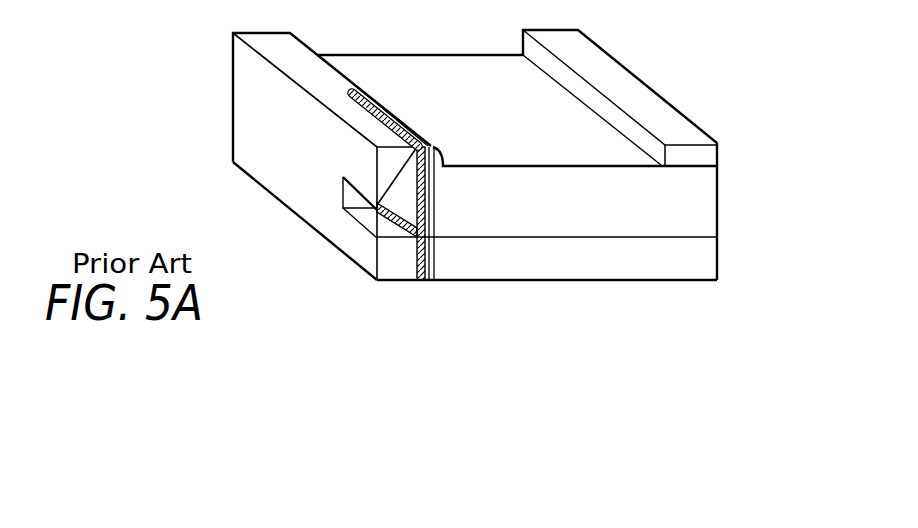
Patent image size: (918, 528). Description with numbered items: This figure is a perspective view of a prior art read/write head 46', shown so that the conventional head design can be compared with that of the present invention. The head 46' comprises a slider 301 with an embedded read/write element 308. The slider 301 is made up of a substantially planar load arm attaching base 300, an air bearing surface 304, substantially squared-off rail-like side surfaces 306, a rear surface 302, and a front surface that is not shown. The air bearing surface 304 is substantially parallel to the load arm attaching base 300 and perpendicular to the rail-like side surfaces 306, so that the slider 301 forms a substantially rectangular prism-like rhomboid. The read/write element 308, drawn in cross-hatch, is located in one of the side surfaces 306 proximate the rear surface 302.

The read/write head 46' is at (620, 83).
The load arm attaching base 300 is at (658, 280).
The slider 301 is at (683, 237).
The rear surface 302 is at (499, 271).
The air bearing surface 304 is at (430, 68).
The rail-like side surfaces 306 is at (297, 163).
The read/write element 308 is at (422, 280).